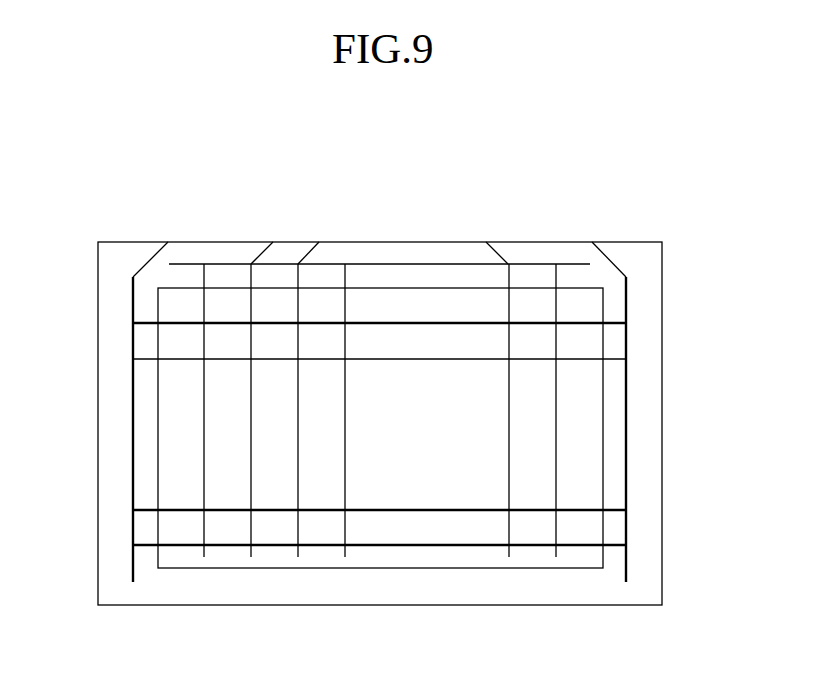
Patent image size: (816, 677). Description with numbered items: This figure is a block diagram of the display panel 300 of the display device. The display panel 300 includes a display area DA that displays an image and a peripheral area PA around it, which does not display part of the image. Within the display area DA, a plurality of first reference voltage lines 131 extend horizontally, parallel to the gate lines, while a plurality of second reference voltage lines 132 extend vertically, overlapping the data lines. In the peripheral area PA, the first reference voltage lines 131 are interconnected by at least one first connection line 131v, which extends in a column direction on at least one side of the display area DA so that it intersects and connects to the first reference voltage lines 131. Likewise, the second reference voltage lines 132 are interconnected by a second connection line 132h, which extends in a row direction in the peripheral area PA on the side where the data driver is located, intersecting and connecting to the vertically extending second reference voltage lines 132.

The display panel 300 is at (662, 392).
The peripheral area PA is at (643, 259).
The display area DA is at (603, 303).
The first connection line 131v is at (133, 343).
The first reference voltage lines 131 is at (178, 509).
The second connection line 132h is at (449, 264).
The second reference voltage lines 132 is at (203, 528).